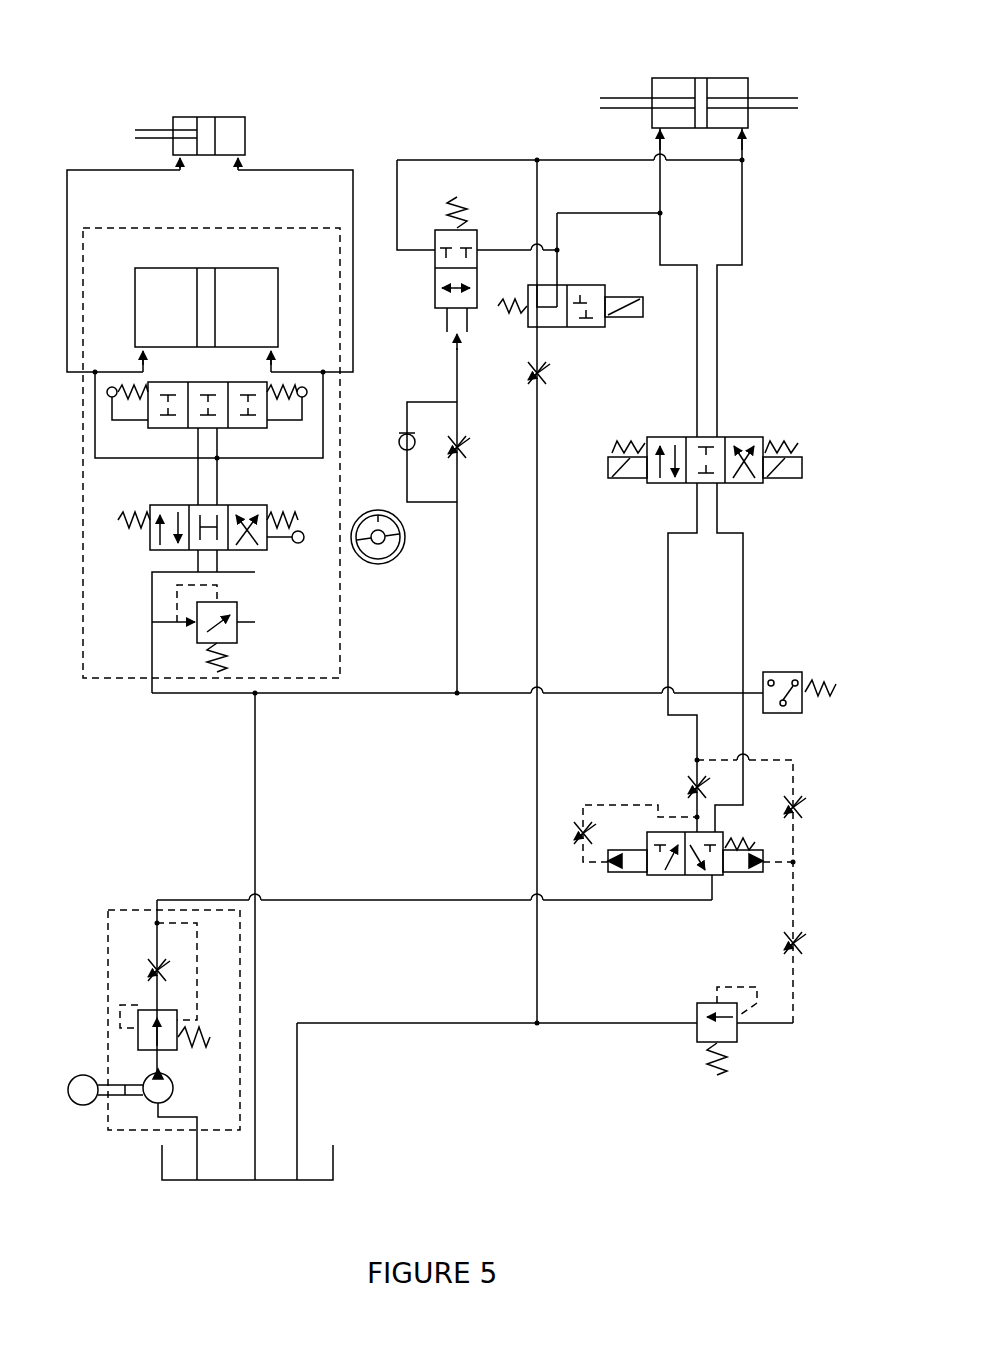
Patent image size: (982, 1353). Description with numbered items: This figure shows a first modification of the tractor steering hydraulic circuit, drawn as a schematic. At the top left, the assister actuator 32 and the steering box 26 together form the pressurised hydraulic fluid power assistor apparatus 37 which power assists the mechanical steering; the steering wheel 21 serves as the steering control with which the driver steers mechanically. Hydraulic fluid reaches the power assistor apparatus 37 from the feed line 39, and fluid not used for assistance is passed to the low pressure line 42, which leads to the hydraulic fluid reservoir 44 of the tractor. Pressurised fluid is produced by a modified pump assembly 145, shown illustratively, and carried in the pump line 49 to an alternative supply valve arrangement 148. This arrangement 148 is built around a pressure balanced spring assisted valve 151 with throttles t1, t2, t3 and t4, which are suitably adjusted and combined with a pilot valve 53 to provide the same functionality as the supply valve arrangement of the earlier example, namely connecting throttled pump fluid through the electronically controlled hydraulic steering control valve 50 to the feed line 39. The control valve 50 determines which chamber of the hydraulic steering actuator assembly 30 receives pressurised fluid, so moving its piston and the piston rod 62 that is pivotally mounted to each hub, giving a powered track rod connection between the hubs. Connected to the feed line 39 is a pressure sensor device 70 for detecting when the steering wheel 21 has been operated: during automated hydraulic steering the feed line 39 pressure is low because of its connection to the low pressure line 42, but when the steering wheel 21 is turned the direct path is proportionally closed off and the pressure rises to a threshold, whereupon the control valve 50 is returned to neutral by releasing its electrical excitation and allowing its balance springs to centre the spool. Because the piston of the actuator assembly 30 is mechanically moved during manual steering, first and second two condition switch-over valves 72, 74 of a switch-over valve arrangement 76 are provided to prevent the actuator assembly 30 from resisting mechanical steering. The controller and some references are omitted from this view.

The steering wheel 21 is at (405, 553).
The steering box 26 is at (343, 390).
The hydraulic steering actuator assembly 30 is at (740, 63).
The assister actuator 32 is at (260, 114).
The power assistor apparatus 37 is at (350, 579).
The feed line 39 is at (240, 697).
The low pressure line 42 is at (262, 790).
The hydraulic fluid reservoir 44 is at (340, 1172).
The pump line 49 is at (468, 903).
The electronically controlled hydraulic steering control valve 50 is at (748, 408).
The pilot valve 53 is at (744, 1051).
The piston rod 62 is at (640, 97).
The pressure sensor device 70 is at (787, 670).
The first two condition switch-over valve 72 is at (586, 352).
The second two condition switch-over valve 74 is at (466, 228).
The switch-over valve arrangement 76 is at (502, 468).
The modified pump assembly 145 is at (100, 966).
The alternative supply valve arrangement 148 is at (809, 892).
The pressure balanced spring assisted valve 151 is at (733, 878).
The throttle t1 is at (681, 782).
The throttle t2 is at (566, 822).
The throttle t3 is at (800, 797).
The throttle t4 is at (780, 940).